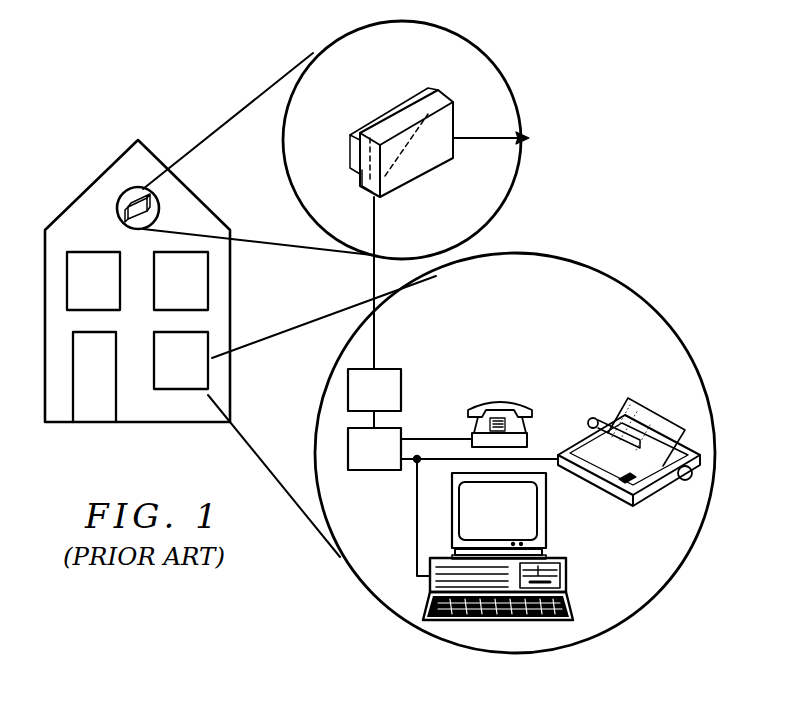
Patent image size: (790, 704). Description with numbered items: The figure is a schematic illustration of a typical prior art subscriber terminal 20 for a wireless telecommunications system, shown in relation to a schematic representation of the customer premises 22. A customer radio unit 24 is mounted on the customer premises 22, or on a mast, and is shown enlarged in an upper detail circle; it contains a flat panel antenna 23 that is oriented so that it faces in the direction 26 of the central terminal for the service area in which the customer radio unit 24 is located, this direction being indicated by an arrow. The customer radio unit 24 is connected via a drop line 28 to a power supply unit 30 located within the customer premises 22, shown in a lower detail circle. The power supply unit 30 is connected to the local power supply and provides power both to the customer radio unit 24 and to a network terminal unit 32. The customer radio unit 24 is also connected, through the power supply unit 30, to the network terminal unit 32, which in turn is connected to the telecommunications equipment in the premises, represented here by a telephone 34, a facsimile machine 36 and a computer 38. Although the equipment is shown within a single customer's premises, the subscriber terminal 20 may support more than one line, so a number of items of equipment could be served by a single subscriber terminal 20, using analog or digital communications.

The subscriber terminal 20 is at (600, 176).
The customer premises 22 is at (90, 184).
The flat panel antenna 23 is at (368, 184).
The customer radio unit 24 is at (443, 100).
The direction of the central terminal 26 is at (472, 137).
The drop line 28 is at (372, 273).
The power supply unit 30 is at (402, 388).
The network terminal unit 32 is at (374, 471).
The telephone 34 is at (510, 400).
The facsimile machine 36 is at (605, 491).
The computer 38 is at (566, 576).